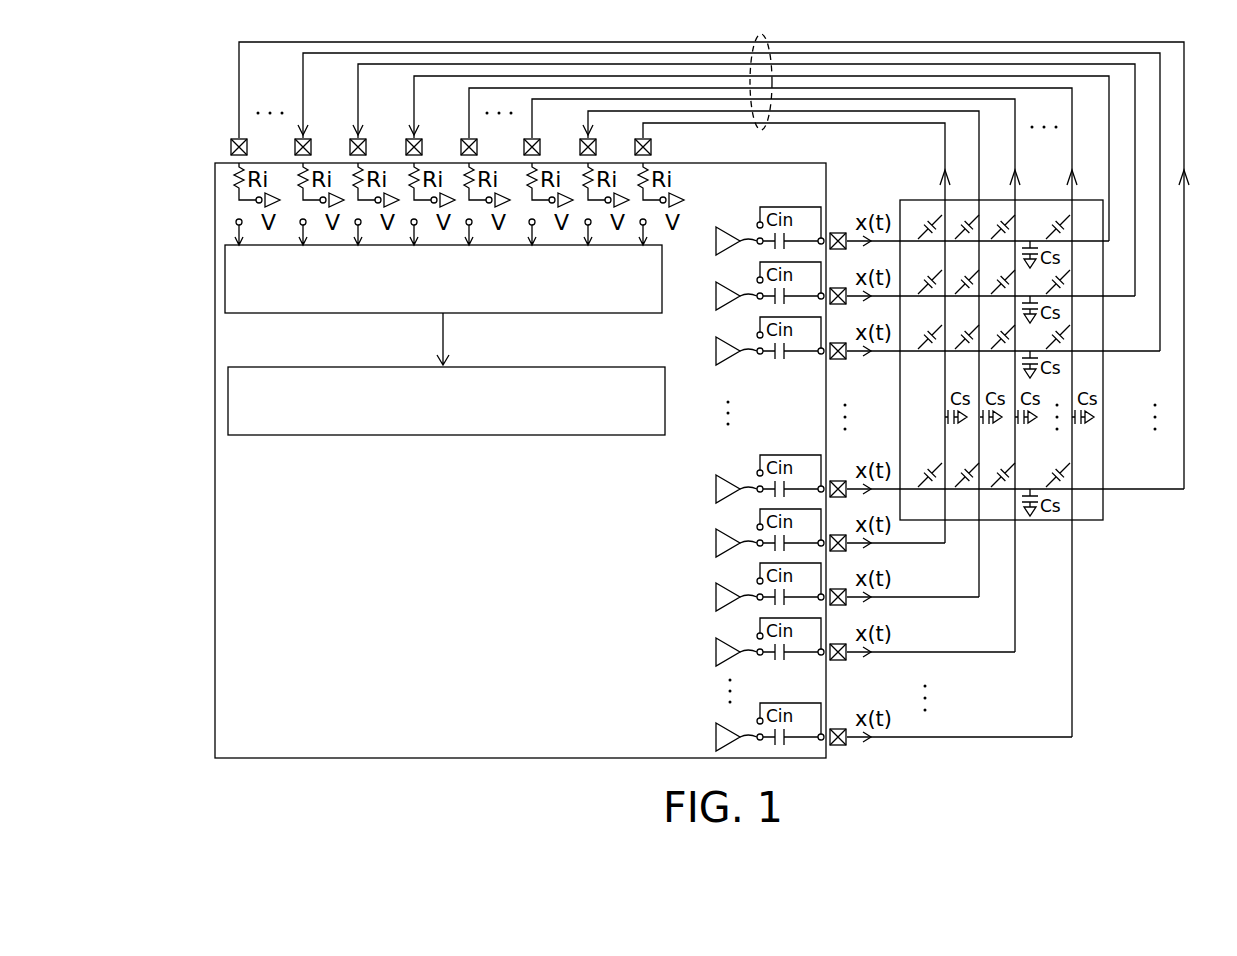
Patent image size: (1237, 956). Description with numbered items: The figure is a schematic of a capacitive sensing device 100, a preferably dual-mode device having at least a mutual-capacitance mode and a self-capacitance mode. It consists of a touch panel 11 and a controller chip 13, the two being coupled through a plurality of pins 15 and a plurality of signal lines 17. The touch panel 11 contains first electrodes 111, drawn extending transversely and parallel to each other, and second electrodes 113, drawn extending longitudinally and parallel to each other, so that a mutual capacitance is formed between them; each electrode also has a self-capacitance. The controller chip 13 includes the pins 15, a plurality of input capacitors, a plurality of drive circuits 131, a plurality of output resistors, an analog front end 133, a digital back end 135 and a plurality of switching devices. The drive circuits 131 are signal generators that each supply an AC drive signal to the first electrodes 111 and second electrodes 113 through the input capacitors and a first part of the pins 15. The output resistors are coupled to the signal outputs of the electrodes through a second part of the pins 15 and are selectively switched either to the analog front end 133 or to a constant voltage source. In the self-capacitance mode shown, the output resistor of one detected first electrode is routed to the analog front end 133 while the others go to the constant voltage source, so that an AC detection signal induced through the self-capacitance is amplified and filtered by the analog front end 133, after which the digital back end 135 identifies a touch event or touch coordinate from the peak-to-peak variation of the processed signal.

The capacitive sensing device 100 is at (166, 105).
The touch panel 11 is at (1090, 521).
The first electrodes 111 is at (963, 490).
The second electrodes 113 is at (1073, 505).
The controller chip 13 is at (215, 217).
The drive circuits 131 is at (783, 479).
The analog front end 133 is at (225, 283).
The digital back end 135 is at (228, 396).
The pins 15 is at (231, 148).
The signal lines 17 is at (762, 33).